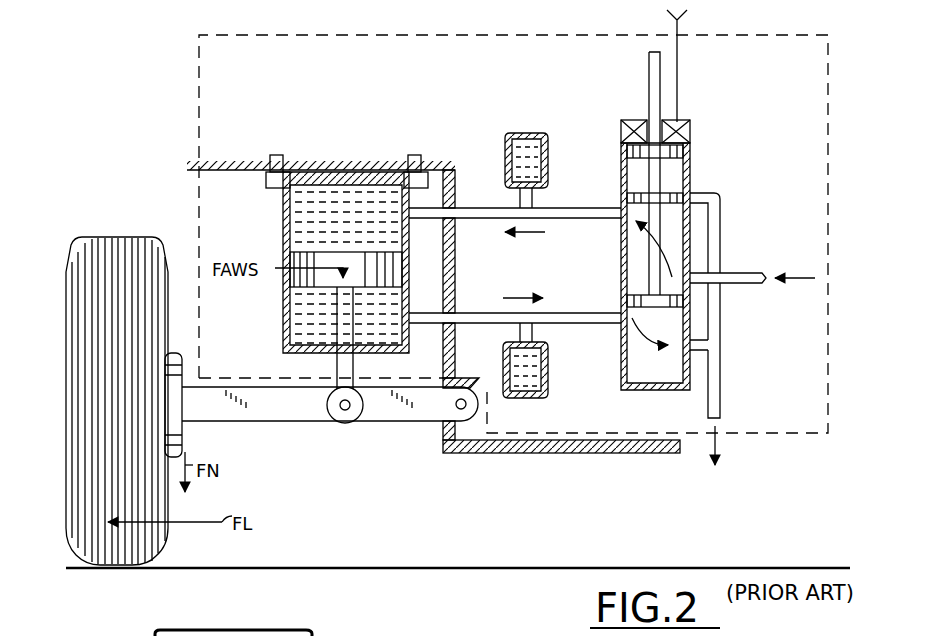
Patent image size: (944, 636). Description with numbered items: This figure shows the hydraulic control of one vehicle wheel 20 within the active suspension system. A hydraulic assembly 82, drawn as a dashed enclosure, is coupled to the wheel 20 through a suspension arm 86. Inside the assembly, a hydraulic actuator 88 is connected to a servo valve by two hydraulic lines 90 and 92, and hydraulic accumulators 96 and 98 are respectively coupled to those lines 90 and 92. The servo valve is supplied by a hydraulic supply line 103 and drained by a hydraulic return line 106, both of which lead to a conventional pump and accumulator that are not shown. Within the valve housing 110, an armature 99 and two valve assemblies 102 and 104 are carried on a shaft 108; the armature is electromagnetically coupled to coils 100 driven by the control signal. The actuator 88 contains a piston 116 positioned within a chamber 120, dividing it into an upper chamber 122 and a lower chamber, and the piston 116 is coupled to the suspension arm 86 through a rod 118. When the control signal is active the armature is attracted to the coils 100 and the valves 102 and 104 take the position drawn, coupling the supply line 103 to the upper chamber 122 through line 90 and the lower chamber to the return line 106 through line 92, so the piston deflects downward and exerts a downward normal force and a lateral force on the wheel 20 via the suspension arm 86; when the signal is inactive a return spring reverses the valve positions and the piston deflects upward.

The wheel 20 is at (103, 236).
The hydraulic assembly 82 is at (199, 88).
The suspension arm 86 is at (305, 421).
The hydraulic actuator 88 is at (280, 208).
The hydraulic line 90 is at (463, 207).
The hydraulic line 92 is at (481, 312).
The hydraulic accumulator 96 is at (524, 133).
The hydraulic accumulator 98 is at (548, 396).
The armature 99 is at (689, 148).
The coils 100 is at (683, 121).
The valve assembly 102 is at (690, 186).
The hydraulic supply line 103 is at (736, 273).
The valve assembly 104 is at (690, 301).
The hydraulic return line 106 is at (722, 383).
The shaft 108 is at (656, 220).
The housing 110 is at (621, 357).
The piston 116 is at (290, 258).
The rod 118 is at (337, 360).
The chamber 120 is at (298, 302).
The upper chamber 122 is at (372, 184).